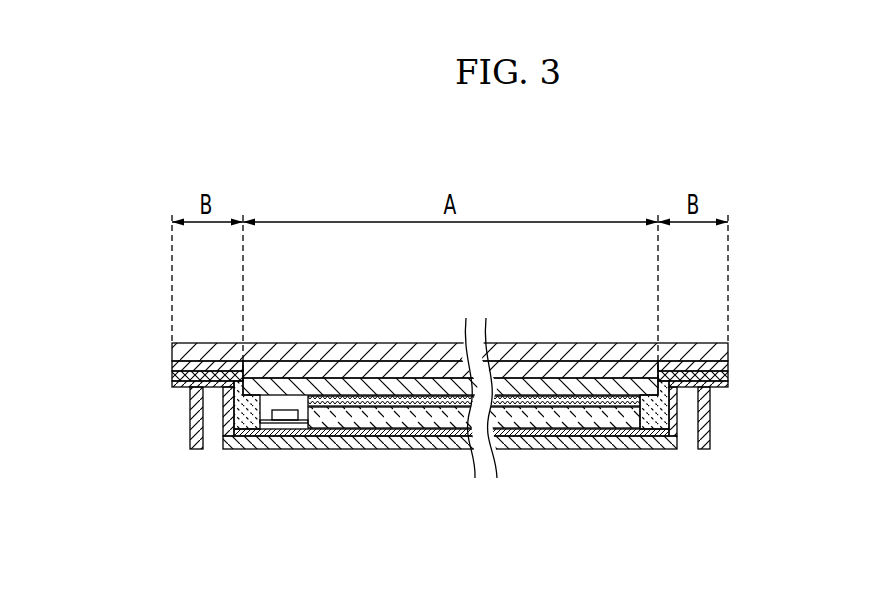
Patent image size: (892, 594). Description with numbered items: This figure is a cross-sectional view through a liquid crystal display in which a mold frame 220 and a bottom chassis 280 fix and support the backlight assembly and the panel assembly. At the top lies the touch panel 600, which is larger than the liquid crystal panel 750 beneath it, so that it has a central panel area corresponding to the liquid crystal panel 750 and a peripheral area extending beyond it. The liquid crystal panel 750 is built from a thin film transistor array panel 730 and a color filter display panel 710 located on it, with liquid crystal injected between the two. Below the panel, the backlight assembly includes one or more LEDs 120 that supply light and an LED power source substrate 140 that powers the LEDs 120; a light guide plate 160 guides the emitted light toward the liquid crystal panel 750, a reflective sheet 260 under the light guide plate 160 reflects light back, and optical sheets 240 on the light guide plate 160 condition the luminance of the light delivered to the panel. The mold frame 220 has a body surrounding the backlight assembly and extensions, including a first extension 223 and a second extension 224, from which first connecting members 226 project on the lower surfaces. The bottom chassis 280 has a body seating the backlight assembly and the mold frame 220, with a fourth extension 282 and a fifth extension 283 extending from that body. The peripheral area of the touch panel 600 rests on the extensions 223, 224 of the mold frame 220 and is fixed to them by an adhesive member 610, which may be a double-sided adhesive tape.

The touch panel 600 is at (722, 352).
The adhesive member 610 is at (203, 365).
The liquid crystal panel 750 is at (450, 319).
The color filter display panel 710 is at (385, 372).
The thin film transistor array panel 730 is at (400, 285).
The mold frame 220 is at (450, 441).
The first extension 223 is at (722, 377).
The second extension 224 is at (172, 375).
The first connecting members 226 is at (195, 420).
The bottom chassis 280 is at (452, 448).
The fourth extension 282 is at (722, 385).
The fifth extension 283 is at (172, 385).
The reflective sheet 260 is at (447, 433).
The optical sheets 240 is at (599, 412).
The light guide plate 160 is at (542, 422).
The LED power source substrate 140 is at (267, 423).
The LEDs 120 is at (290, 412).